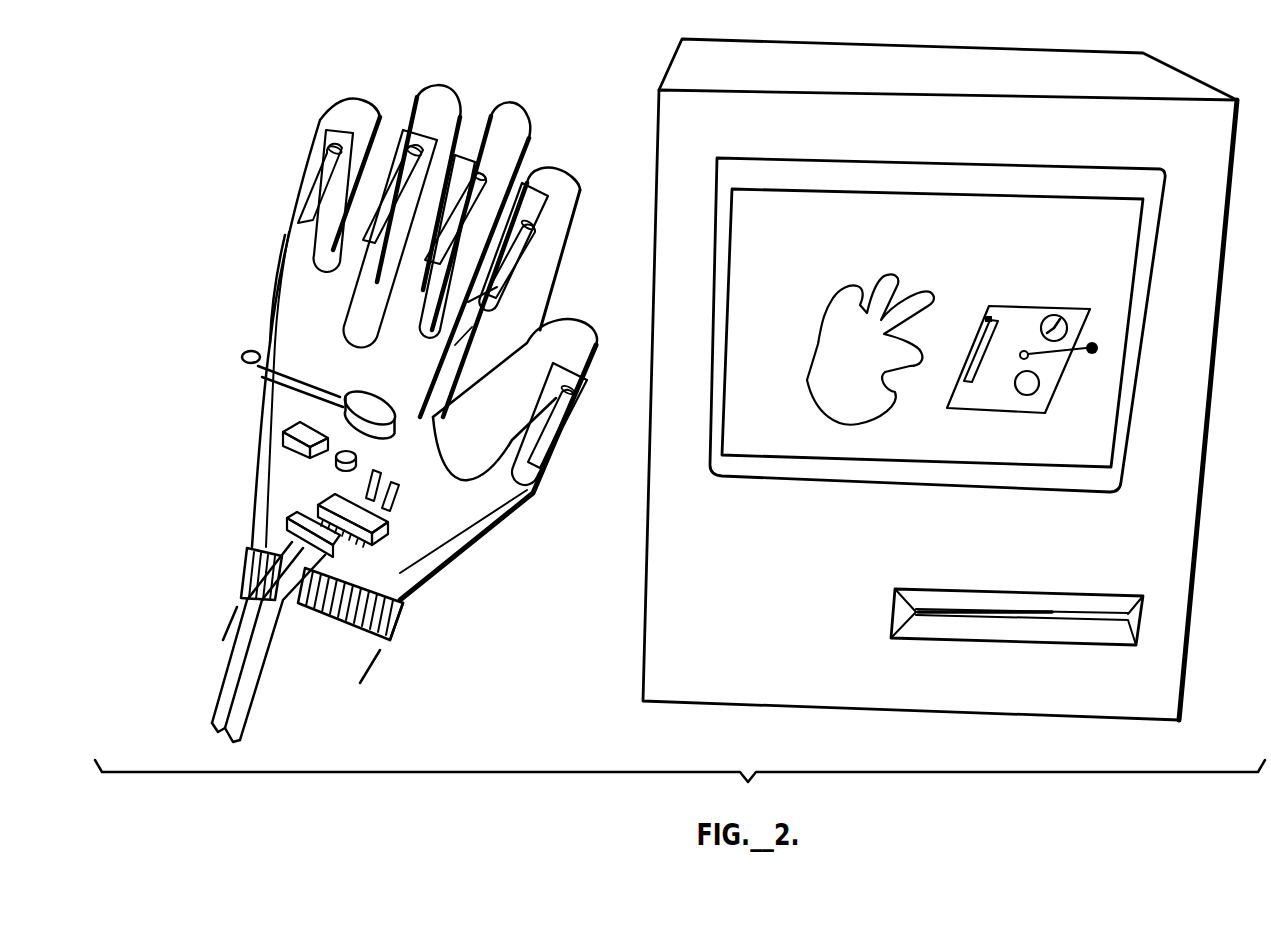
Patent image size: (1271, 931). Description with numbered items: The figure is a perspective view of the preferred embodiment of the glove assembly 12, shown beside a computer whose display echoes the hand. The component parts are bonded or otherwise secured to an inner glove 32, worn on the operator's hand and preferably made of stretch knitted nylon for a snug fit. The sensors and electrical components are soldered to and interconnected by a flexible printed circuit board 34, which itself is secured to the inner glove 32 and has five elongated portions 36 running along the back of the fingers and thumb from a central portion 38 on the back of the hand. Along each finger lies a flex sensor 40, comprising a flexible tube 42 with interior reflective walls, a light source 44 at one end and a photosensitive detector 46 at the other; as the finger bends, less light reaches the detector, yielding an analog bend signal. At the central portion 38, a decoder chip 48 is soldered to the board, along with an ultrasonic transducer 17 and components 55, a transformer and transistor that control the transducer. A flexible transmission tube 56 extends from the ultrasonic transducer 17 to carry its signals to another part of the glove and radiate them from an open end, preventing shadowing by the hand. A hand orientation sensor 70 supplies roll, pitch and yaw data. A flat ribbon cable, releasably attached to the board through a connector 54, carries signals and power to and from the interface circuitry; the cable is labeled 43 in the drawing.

The glove assembly 12 is at (240, 234).
The ultrasonic transducer 17 is at (363, 393).
The inner glove 32 is at (440, 580).
The flexible printed circuit board 34 is at (552, 205).
The elongated portions 36 is at (348, 128).
The central portion 38 is at (455, 510).
The flex sensor 40 is at (326, 162).
The flexible tube 42 is at (512, 260).
The cable 43 is at (238, 668).
The light source 44 is at (550, 190).
The photosensitive detector 46 is at (483, 290).
The decoder chip 48 is at (320, 510).
The connector 54 is at (287, 540).
The components 55 is at (315, 476).
The flexible transmission tube 56 is at (243, 370).
The hand orientation sensor 70 is at (290, 442).